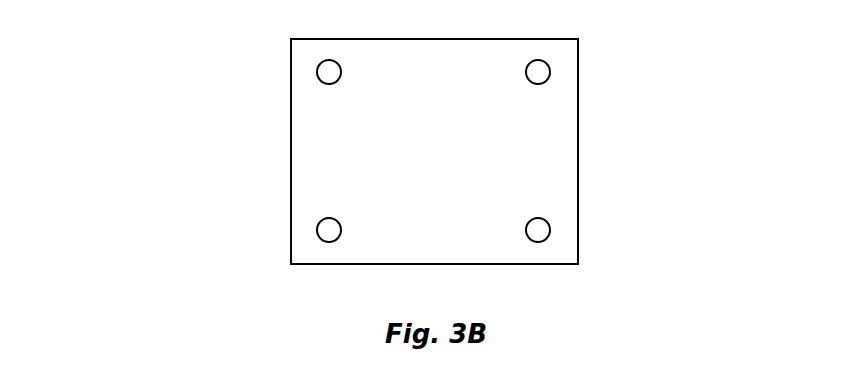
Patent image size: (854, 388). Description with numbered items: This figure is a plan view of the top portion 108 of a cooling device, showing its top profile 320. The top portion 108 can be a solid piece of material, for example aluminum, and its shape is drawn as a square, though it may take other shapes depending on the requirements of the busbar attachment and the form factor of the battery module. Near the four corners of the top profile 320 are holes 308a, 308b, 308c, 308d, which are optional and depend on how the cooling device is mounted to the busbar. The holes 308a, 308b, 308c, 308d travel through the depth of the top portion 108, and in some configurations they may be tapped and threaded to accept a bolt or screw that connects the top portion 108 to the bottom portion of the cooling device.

The top portion 108 is at (397, 190).
The top profile 320 is at (536, 161).
The hole 308a is at (306, 241).
The hole 308b is at (545, 239).
The hole 308c is at (316, 72).
The hole 308d is at (552, 73).